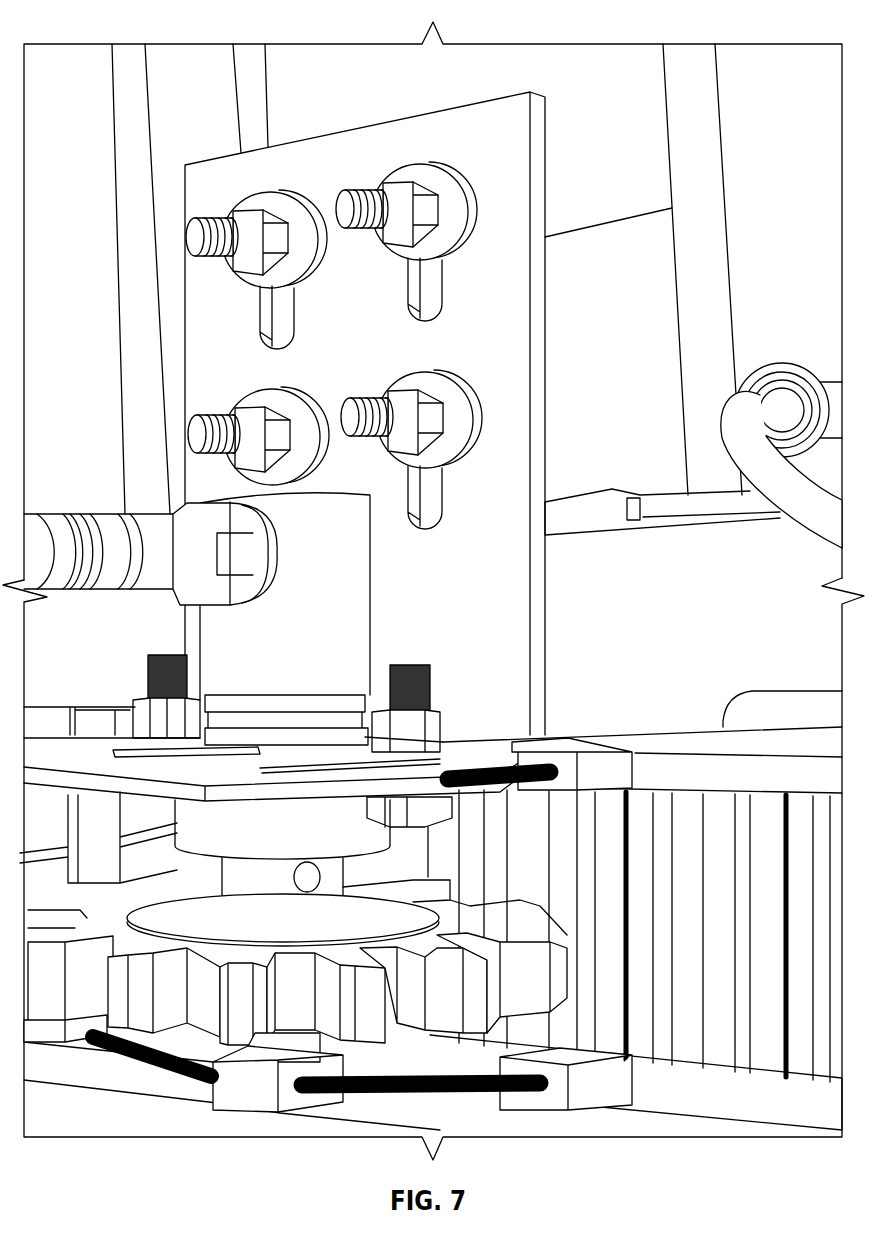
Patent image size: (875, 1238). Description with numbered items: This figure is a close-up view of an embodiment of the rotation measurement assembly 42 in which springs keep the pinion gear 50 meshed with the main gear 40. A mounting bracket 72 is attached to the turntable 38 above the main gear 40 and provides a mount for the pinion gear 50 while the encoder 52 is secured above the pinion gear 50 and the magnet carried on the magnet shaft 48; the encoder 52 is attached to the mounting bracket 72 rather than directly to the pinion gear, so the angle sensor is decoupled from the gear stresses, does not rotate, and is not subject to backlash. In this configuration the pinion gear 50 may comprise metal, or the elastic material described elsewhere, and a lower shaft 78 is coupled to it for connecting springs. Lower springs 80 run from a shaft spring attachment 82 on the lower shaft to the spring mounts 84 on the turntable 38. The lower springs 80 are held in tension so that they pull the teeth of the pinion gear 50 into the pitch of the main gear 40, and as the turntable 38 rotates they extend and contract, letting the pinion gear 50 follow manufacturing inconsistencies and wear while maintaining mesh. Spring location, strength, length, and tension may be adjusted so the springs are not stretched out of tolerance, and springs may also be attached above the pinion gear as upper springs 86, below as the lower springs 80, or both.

The turntable 38 is at (684, 740).
The main gear 40 is at (680, 1020).
The rotation measurement assembly 42 is at (413, 638).
The magnet shaft 48 is at (262, 908).
The pinion gear 50 is at (117, 885).
The encoder 52 is at (356, 608).
The mounting bracket 72 is at (520, 344).
The lower shaft 78 is at (272, 1060).
The lower springs 80 is at (166, 1065).
The shaft spring attachment 82 is at (224, 1088).
The spring mounts 84 is at (75, 1033).
The upper springs 86 is at (510, 752).